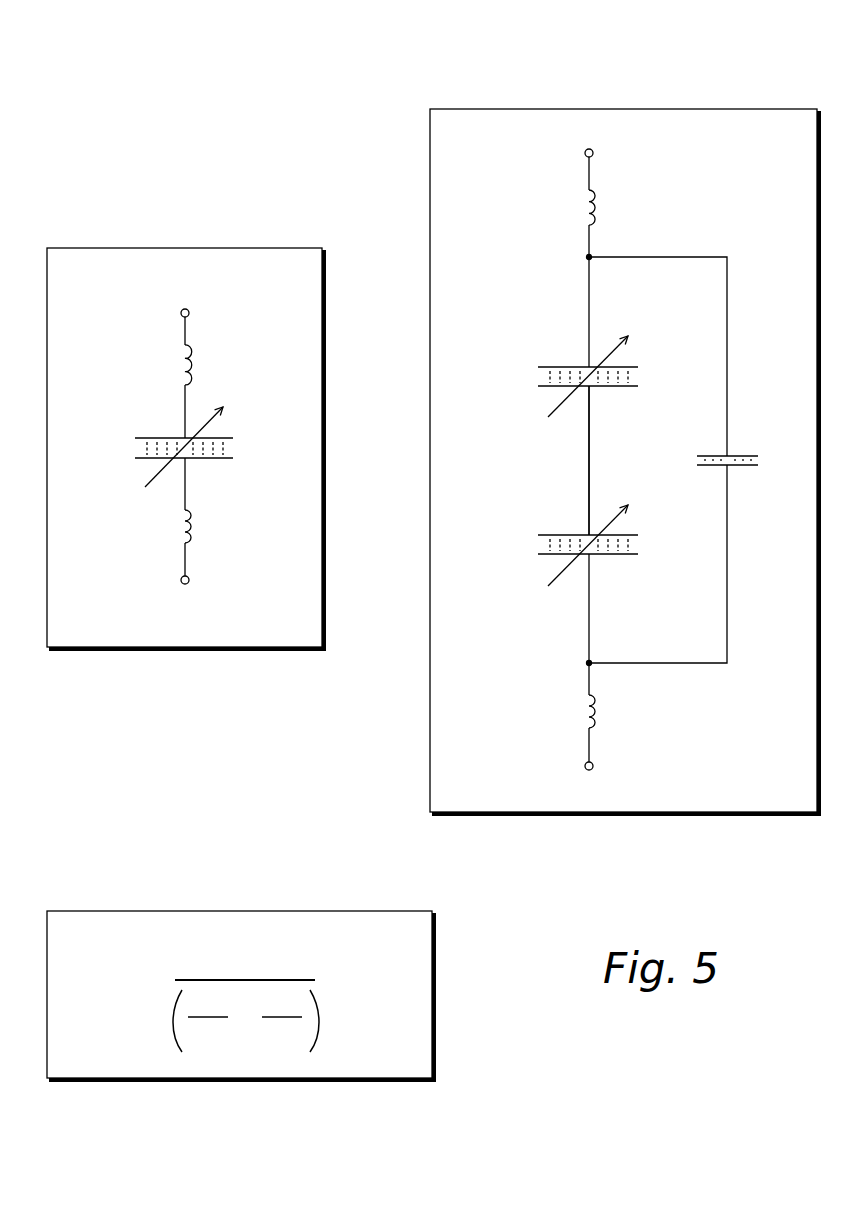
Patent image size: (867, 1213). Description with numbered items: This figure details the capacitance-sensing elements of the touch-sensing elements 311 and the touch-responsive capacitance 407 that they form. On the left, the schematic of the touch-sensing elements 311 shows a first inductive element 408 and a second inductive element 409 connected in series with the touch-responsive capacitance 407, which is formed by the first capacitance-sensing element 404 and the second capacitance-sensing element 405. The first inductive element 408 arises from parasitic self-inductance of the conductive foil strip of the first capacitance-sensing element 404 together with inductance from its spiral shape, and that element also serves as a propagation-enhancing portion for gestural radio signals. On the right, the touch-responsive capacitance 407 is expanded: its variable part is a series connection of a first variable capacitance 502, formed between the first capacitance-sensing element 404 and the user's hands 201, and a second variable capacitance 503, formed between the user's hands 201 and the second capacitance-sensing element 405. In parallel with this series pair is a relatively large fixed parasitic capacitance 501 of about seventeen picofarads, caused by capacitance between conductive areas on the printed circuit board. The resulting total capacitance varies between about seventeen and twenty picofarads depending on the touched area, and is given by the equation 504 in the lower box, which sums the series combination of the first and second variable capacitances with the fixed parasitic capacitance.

The touch-sensing elements 311 is at (270, 260).
The touch-responsive capacitance 407 is at (742, 125).
The first inductive element 408 is at (178, 360).
The second inductive element 409 is at (178, 523).
The first capacitance-sensing element 404 is at (225, 437).
The second capacitance-sensing element 405 is at (225, 462).
The first variable capacitance 502 is at (558, 373).
The second variable capacitance 503 is at (557, 551).
The parasitic capacitance 501 is at (735, 457).
The user's hand 201 is at (525, 460).
The equation 504 is at (310, 925).